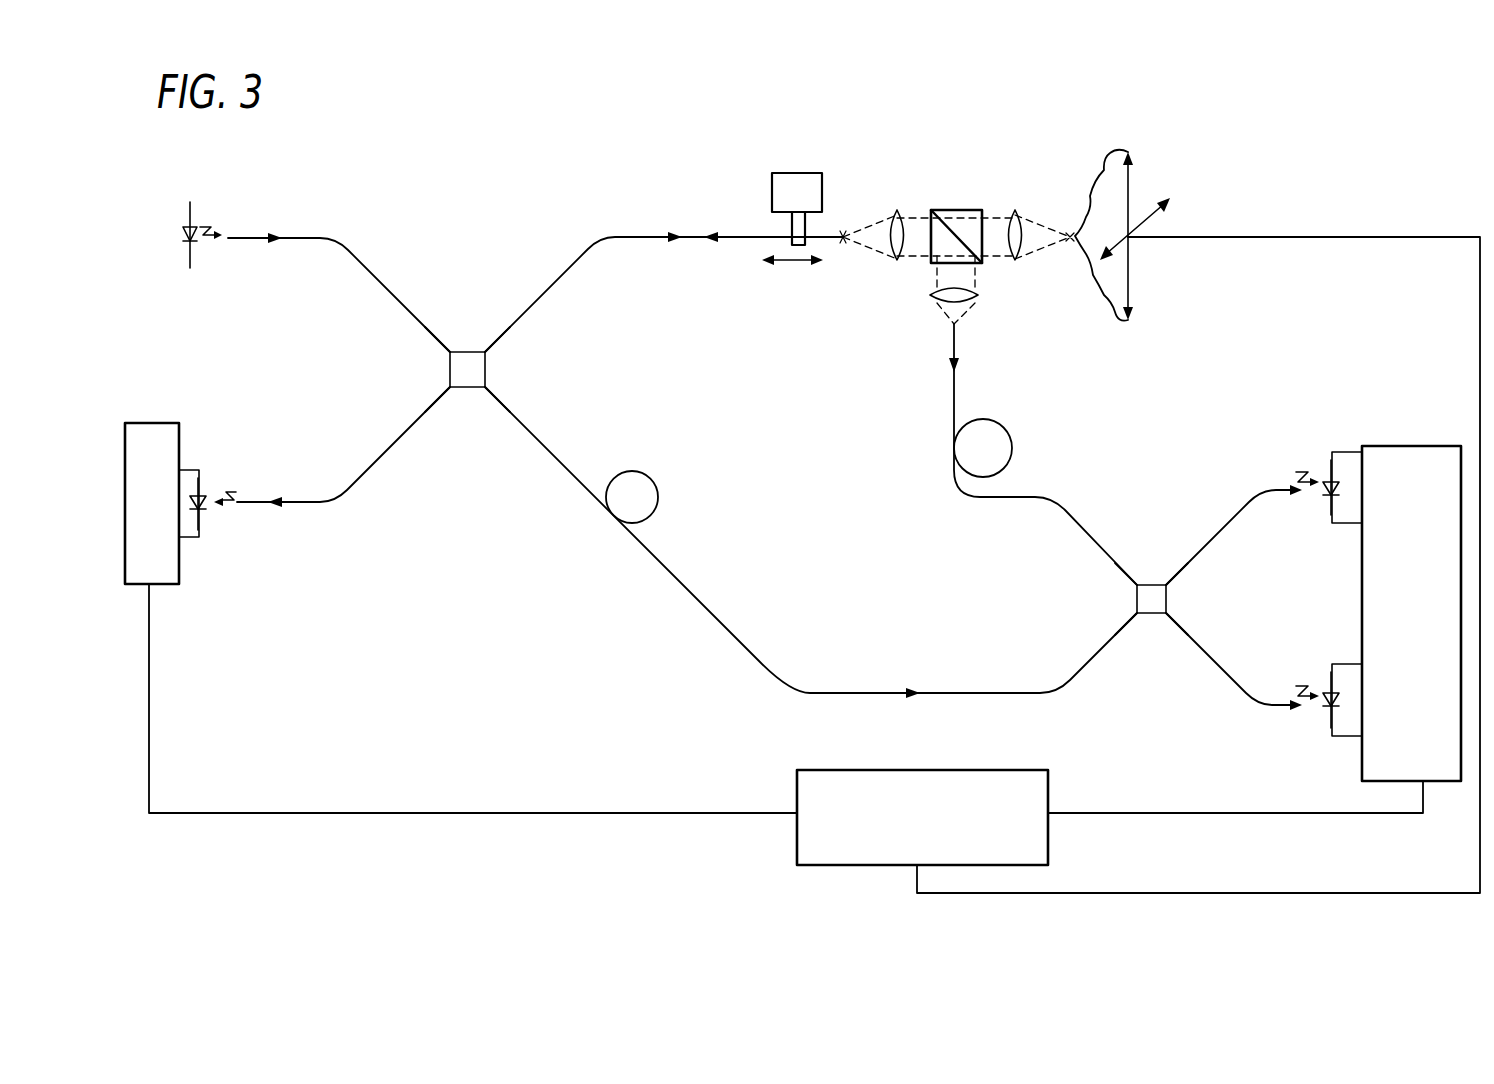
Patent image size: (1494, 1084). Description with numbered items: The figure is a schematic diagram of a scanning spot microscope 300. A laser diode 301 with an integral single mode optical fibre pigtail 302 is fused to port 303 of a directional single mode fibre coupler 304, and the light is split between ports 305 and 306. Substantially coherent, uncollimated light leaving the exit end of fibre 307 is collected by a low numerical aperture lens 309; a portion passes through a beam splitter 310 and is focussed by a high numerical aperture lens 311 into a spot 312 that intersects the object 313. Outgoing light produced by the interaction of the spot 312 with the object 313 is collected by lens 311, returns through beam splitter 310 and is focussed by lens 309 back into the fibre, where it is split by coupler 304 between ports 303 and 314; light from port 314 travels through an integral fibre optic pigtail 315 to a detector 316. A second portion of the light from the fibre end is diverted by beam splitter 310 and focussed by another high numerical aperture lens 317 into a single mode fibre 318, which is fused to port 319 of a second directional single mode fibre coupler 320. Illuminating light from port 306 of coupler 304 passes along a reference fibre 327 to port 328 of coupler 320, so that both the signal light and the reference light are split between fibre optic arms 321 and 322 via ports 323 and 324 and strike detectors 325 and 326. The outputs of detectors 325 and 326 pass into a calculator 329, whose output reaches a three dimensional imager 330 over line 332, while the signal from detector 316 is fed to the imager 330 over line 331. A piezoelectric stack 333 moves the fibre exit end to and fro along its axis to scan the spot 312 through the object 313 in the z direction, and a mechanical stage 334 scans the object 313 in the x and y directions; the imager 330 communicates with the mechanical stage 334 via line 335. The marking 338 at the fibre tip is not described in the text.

The scanning spot microscope 300 is at (531, 180).
The laser diode 301 is at (196, 215).
The integral single mode optical fibre pigtail 302 is at (298, 236).
The port 303 is at (452, 350).
The directional single mode fibre coupler 304 is at (488, 372).
The port 305 is at (486, 350).
The port 306 is at (486, 389).
The fibre 307 is at (632, 240).
The low numerical aperture lens 309 is at (900, 228).
The beam splitter 310 is at (962, 226).
The high numerical aperture lens 311 is at (1020, 240).
The spot 312 is at (1062, 228).
The object 313 is at (1126, 152).
The port 314 is at (452, 389).
The integral fibre optic pigtail 315 is at (323, 505).
The detector 316 is at (158, 423).
The high numerical aperture lens 317 is at (938, 296).
The single mode fibre 318 is at (954, 390).
The port 319 is at (1140, 583).
The directional single mode fibre coupler 320 is at (1168, 598).
The fibre optic arm 321 is at (1238, 508).
The fibre optic arm 322 is at (1232, 675).
The port 323 is at (1163, 583).
The port 324 is at (1166, 616).
The detector 325 is at (1326, 468).
The detector 326 is at (1322, 720).
The reference fibre 327 is at (735, 638).
The port 328 is at (1138, 616).
The calculator 329 is at (1424, 464).
The three dimensional imager 330 is at (1028, 792).
The line 331 is at (407, 815).
The line 332 is at (1182, 815).
The piezoelectric stack 333 is at (802, 183).
The mechanical stage 334 is at (1136, 244).
The line 335 is at (1247, 236).
The fiber end face 338 is at (850, 228).